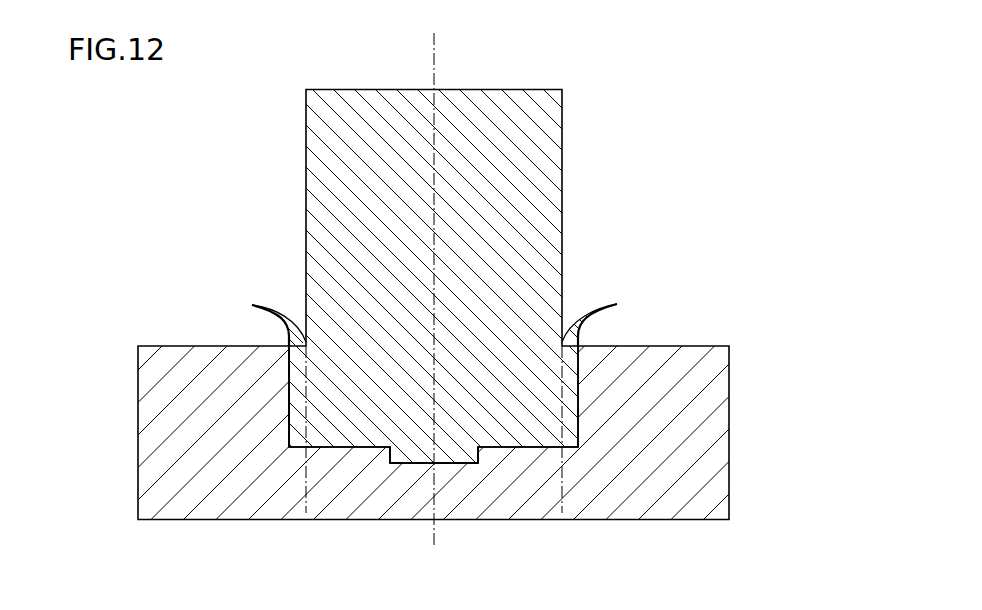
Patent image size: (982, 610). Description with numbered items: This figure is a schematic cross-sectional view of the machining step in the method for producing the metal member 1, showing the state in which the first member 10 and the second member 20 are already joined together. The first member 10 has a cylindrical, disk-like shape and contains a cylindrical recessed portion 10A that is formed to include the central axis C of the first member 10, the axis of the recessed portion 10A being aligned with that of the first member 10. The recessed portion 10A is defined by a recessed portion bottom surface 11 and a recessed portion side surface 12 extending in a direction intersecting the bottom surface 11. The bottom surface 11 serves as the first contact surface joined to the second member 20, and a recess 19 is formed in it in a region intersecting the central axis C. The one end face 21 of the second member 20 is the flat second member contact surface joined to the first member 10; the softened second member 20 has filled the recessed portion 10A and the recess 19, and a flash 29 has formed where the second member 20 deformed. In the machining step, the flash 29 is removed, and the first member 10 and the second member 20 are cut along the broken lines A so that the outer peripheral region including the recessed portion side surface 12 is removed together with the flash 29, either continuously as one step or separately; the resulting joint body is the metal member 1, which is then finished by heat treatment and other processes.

The metal member 1 is at (622, 61).
The first member 10 is at (702, 375).
The recessed portion 10A is at (278, 368).
The recessed portion bottom surface 11 is at (363, 446).
The recessed portion side surface 12 is at (288, 422).
The recess 19 is at (460, 440).
The second member 20 is at (527, 190).
The one end face 21 is at (376, 450).
The flash 29 is at (582, 325).
The broken lines A is at (562, 490).
The central axis C is at (434, 58).